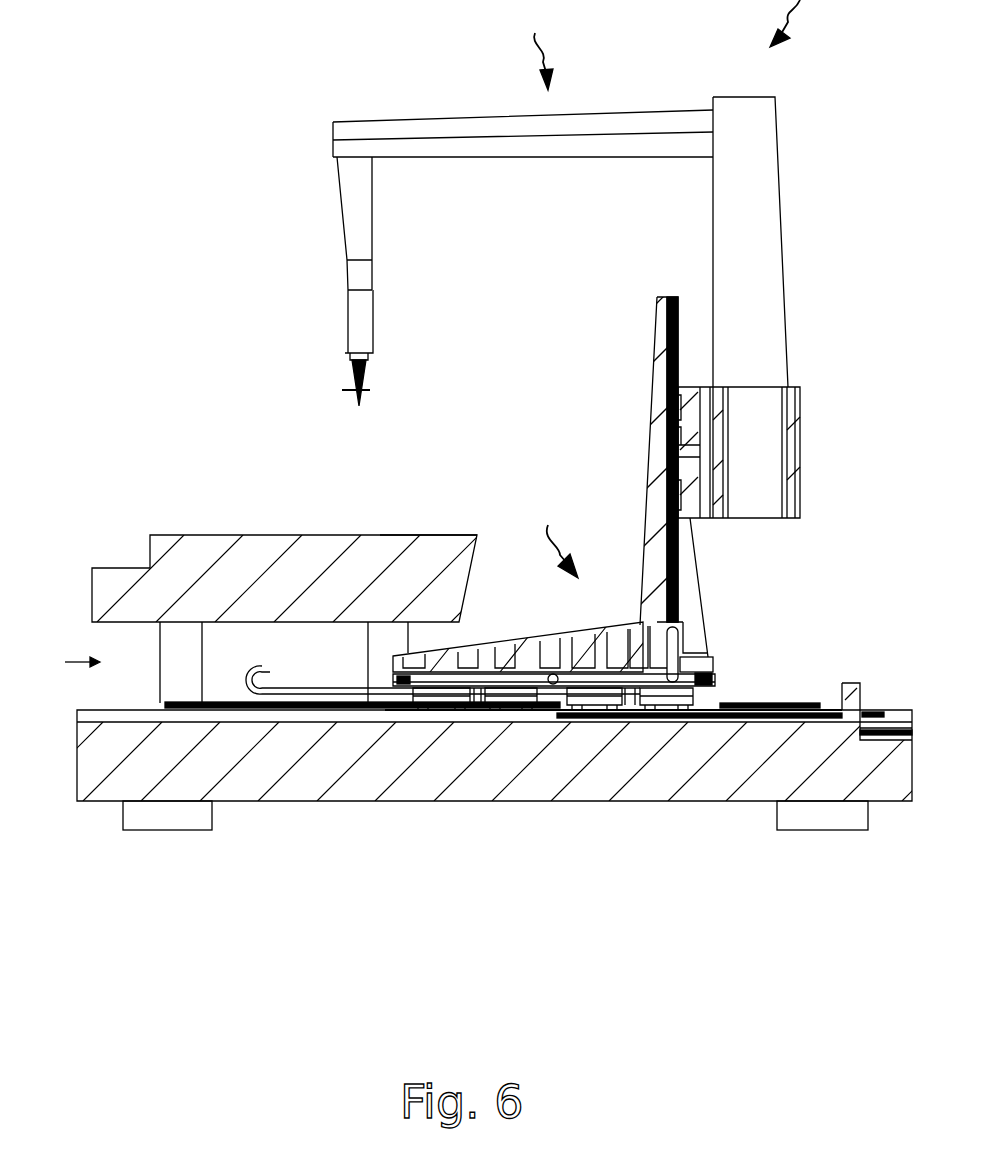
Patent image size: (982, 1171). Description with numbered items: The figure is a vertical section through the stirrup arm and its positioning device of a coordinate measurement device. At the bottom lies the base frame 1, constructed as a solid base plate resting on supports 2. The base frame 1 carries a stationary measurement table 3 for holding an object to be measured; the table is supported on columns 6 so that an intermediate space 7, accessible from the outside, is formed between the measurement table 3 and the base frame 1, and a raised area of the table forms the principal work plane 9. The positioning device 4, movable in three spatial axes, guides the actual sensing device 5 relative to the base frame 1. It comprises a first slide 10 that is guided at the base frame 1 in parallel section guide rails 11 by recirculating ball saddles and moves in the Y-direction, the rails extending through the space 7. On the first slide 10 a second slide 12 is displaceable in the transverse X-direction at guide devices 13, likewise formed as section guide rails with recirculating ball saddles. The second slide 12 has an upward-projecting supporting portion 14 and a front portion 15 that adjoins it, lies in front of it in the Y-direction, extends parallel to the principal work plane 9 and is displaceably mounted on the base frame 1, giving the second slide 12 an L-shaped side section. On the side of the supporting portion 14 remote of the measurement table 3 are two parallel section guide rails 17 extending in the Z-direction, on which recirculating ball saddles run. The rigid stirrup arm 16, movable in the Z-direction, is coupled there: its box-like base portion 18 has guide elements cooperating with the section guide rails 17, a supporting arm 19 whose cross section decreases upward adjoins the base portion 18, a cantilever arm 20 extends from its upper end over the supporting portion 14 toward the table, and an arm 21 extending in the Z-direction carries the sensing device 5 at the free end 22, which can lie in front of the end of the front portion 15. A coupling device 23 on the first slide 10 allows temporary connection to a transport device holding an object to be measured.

The base frame 1 is at (88, 757).
The supports 2 is at (138, 818).
The measurement table 3 is at (254, 550).
The positioning device 4 is at (560, 529).
The sensing device 5 is at (348, 310).
The columns 6 is at (172, 662).
The intermediate space 7 is at (68, 667).
The principal work plane 9 is at (452, 530).
The first slide 10 is at (712, 700).
The section guide rails 11 is at (303, 690).
The second slide 12 is at (652, 626).
The guide devices 13 is at (715, 680).
The supporting portion 14 is at (660, 478).
The front portion 15 is at (553, 664).
The stirrup arm 16 is at (541, 45).
The section guide rails 17 is at (684, 552).
The base portion 18 is at (797, 440).
The supporting arm 19 is at (762, 180).
The cantilever arm 20 is at (641, 115).
The arm 21 is at (352, 208).
The free end 22 is at (352, 268).
The coupling device 23 is at (252, 664).